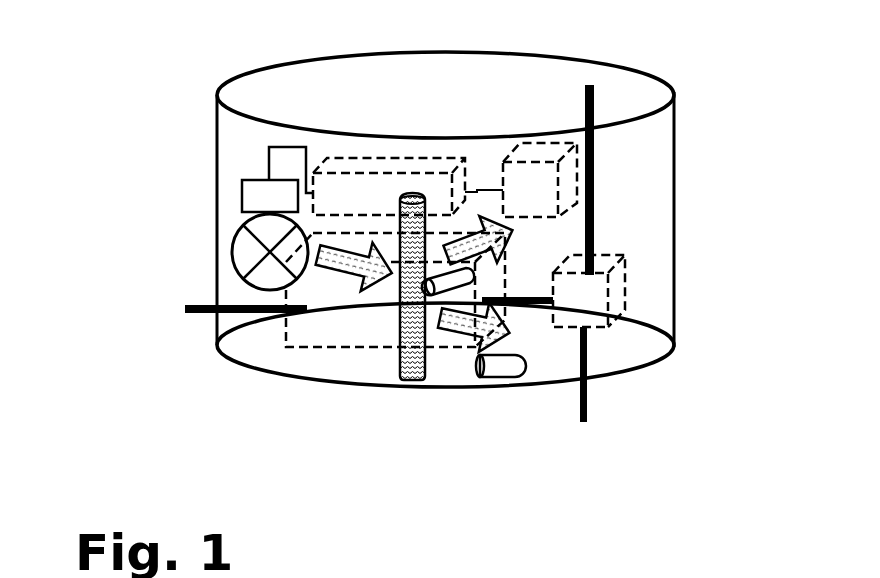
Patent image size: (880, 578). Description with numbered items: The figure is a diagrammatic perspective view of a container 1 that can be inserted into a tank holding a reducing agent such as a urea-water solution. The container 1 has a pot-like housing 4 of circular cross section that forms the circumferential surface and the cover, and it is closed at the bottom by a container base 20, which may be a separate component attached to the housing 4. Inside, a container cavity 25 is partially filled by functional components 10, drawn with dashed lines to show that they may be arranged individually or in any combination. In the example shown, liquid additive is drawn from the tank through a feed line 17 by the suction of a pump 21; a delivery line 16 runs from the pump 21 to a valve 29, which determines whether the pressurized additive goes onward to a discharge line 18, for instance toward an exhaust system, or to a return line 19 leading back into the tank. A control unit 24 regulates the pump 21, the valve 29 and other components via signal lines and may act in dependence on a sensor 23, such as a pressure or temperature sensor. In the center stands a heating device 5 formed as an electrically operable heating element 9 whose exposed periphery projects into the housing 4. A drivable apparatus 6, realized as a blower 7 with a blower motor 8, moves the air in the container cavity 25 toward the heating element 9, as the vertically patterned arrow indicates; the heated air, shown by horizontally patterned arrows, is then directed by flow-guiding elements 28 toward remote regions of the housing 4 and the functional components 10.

The container 1 is at (158, 84).
The housing 4 is at (674, 137).
The heating device 5 is at (362, 374).
The drivable apparatus 6 is at (165, 217).
The blower 7 is at (247, 250).
The blower motor 8 is at (252, 196).
The electrically operable heating element 9 is at (407, 375).
The functional components 10 is at (475, 102).
The delivery line 16 is at (583, 422).
The feed line 17 is at (185, 313).
The discharge line 18 is at (587, 405).
The return line 19 is at (593, 107).
The container base 20 is at (255, 358).
The pump 21 is at (310, 337).
The sensor 23 is at (537, 148).
The control unit 24 is at (345, 163).
The container cavity 25 is at (640, 200).
The flow-guiding elements 28 is at (440, 282).
The valve 29 is at (613, 287).